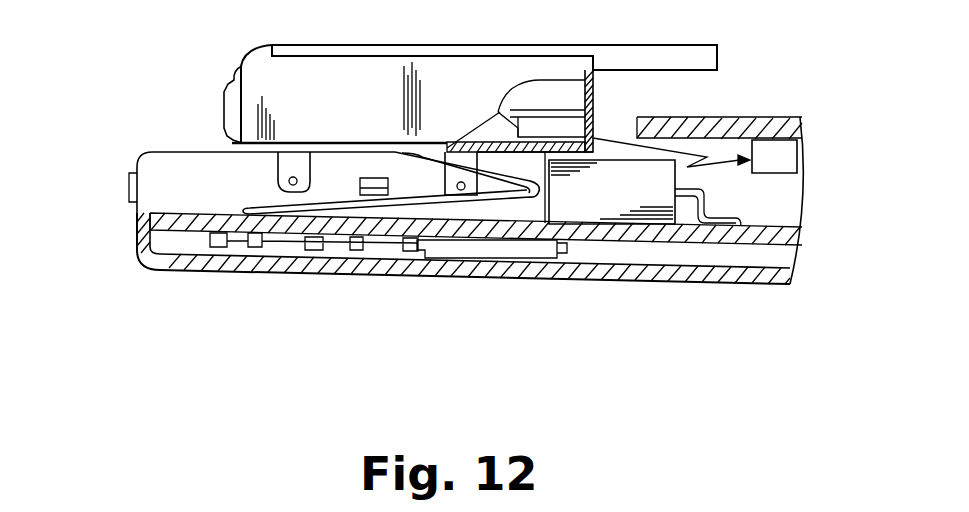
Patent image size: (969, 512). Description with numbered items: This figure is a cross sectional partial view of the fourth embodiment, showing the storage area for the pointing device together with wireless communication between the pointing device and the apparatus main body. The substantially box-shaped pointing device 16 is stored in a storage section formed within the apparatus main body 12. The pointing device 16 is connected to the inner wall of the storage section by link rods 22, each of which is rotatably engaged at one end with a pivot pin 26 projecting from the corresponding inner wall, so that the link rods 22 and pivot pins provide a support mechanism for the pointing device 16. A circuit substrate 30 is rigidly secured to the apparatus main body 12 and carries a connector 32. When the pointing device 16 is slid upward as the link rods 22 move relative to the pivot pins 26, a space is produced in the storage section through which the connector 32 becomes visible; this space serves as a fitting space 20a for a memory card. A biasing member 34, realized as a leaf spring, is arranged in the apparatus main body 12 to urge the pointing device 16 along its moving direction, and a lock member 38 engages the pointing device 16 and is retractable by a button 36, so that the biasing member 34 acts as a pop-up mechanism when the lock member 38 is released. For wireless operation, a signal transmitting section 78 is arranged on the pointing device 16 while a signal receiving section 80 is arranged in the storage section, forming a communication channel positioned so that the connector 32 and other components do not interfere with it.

The apparatus main body 12 is at (202, 277).
The pointing device 16 is at (240, 60).
The fitting space 20a is at (137, 208).
The link rods 22 is at (280, 166).
The pivot pin 26 is at (292, 186).
The circuit substrate 30 is at (723, 235).
The connector 32 is at (622, 190).
The biasing member 34 is at (512, 203).
The button 36 is at (130, 187).
The lock member 38 is at (370, 196).
The signal transmitting section 78 is at (578, 125).
The signal receiving section 80 is at (780, 160).